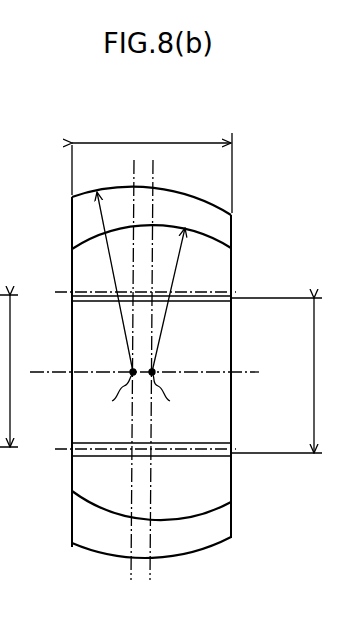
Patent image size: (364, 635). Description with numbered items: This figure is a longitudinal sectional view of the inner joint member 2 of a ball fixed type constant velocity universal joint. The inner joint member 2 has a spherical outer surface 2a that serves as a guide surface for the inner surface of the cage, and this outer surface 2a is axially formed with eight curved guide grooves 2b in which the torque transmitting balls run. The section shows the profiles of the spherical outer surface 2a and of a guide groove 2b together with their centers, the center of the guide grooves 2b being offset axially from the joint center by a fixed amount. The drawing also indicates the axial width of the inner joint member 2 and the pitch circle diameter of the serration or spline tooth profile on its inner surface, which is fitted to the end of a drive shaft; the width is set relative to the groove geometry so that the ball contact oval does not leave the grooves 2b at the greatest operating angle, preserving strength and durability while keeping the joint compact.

The inner joint member 2 is at (46, 180).
The spherical outer surface 2a is at (216, 205).
The curved guide grooves 2b is at (214, 238).